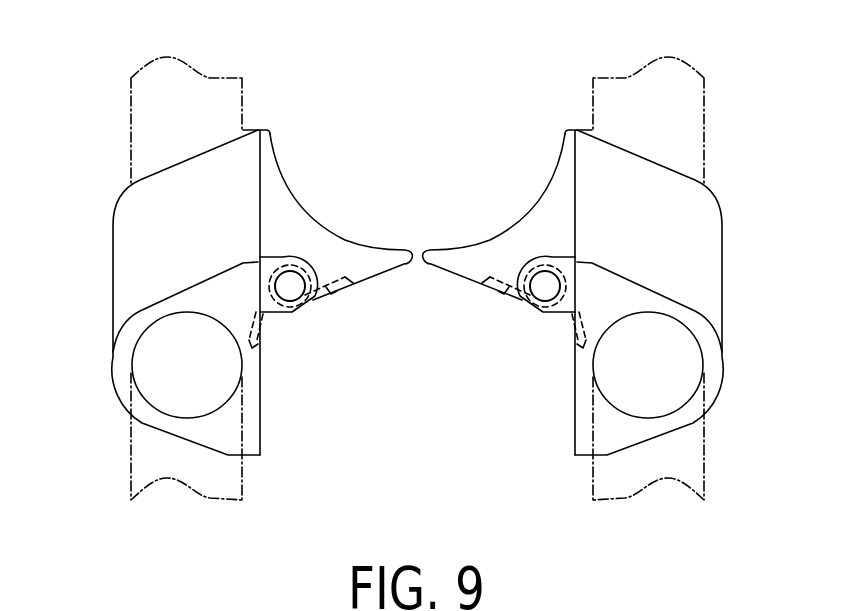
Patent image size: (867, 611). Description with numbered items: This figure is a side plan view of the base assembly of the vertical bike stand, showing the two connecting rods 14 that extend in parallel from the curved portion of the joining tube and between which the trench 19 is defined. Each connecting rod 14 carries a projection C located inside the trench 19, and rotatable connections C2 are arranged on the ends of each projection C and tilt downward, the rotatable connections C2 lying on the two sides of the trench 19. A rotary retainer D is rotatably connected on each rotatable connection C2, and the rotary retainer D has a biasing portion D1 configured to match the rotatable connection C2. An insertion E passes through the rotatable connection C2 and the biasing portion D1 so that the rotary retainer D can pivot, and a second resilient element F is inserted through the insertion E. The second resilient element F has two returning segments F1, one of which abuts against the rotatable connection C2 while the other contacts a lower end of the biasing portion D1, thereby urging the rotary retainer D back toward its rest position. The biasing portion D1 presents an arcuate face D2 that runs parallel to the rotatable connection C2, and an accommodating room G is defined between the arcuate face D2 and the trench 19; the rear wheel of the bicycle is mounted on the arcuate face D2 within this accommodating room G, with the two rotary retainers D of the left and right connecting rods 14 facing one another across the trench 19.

The connecting rod 14 is at (140, 112).
The projection C is at (113, 259).
The rotary retainer D is at (267, 128).
The arcuate face D2 is at (345, 237).
The accommodating room G is at (460, 108).
The insertion E is at (290, 284).
The rotatable connection C2 is at (294, 313).
The biasing portion D1 is at (415, 386).
The returning segment F1 is at (333, 302).
The second resilient element F is at (282, 313).
The trench 19 is at (412, 422).